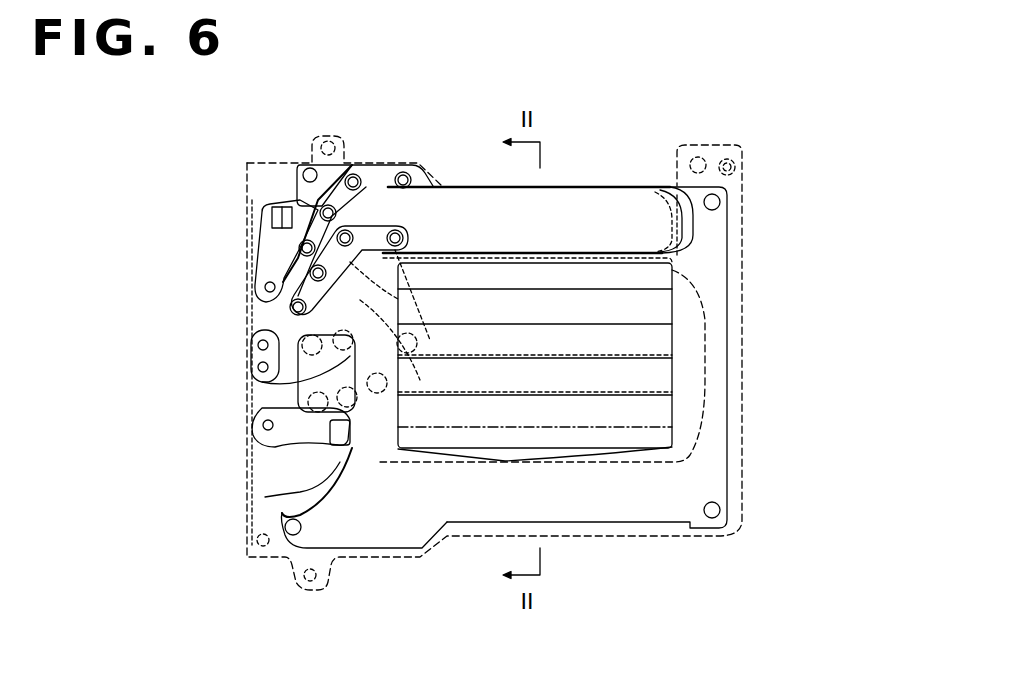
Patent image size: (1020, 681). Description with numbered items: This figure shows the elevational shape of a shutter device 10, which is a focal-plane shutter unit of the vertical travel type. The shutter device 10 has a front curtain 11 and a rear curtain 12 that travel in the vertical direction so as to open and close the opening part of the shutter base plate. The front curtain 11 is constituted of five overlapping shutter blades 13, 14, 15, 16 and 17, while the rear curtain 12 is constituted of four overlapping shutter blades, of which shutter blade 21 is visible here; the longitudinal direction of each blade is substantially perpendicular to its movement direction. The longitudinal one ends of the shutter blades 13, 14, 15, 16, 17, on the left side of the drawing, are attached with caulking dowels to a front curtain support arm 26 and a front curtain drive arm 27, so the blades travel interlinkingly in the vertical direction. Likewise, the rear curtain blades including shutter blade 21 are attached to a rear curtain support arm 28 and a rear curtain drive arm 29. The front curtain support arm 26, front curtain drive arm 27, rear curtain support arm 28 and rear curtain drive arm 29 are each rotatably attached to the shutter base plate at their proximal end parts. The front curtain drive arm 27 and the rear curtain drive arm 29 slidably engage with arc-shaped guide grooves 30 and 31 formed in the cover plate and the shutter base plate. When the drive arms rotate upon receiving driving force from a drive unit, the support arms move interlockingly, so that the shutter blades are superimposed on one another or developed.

The shutter device 10 is at (662, 87).
The front curtain 11 is at (475, 450).
The rear curtain 12 is at (598, 182).
The shutter blade 13 is at (648, 277).
The shutter blade 14 is at (648, 307).
The shutter blade 15 is at (648, 338).
The shutter blade 16 is at (648, 378).
The shutter blade 17 is at (595, 433).
The shutter blade 21 is at (448, 198).
The front curtain support arm 26 is at (280, 378).
The front curtain drive arm 27 is at (287, 438).
The rear curtain support arm 28 is at (268, 320).
The rear curtain drive arm 29 is at (278, 253).
The arc-shaped guide groove 30 is at (280, 498).
The arc-shaped guide groove 31 is at (288, 198).